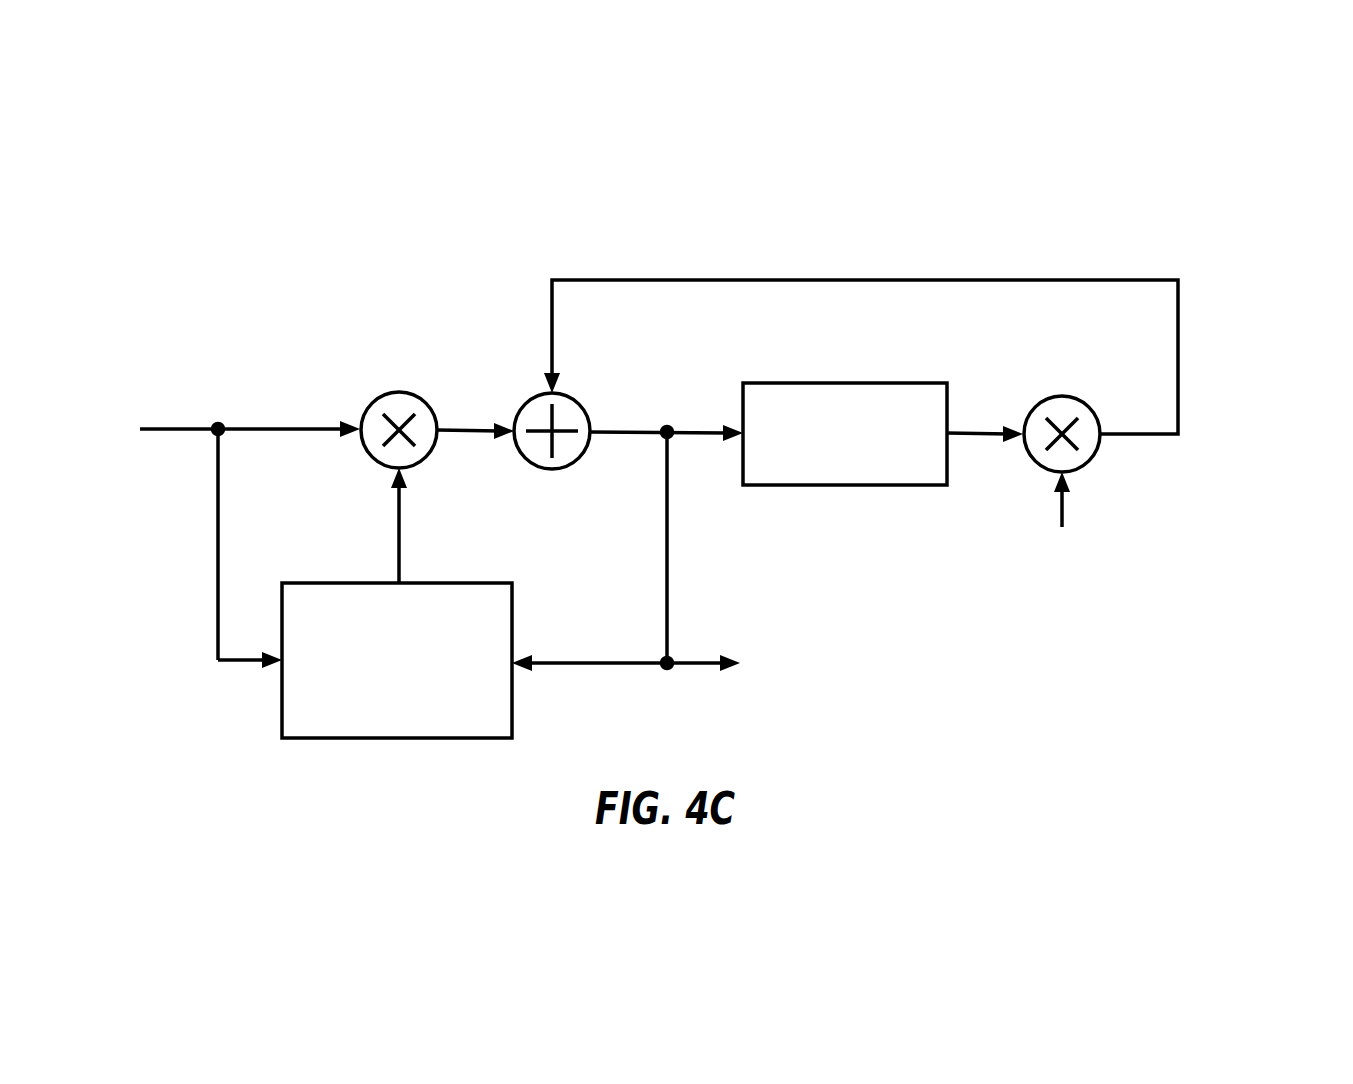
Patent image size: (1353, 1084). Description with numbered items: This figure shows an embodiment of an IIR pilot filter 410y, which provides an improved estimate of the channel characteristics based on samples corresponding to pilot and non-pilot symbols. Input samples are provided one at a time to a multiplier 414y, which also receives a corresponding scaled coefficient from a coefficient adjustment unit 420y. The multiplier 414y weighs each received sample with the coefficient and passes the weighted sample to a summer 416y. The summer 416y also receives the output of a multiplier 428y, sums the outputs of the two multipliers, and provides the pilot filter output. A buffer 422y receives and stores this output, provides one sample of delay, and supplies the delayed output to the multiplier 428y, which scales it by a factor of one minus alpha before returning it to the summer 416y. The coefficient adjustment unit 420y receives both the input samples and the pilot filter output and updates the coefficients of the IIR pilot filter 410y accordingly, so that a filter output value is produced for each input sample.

The IIR pilot filter 410y is at (1288, 210).
The multiplier 414y is at (392, 392).
The summer 416y is at (584, 407).
The coefficient adjustment unit 420y is at (514, 613).
The buffer 422y is at (832, 382).
The multiplier 428y is at (1070, 380).